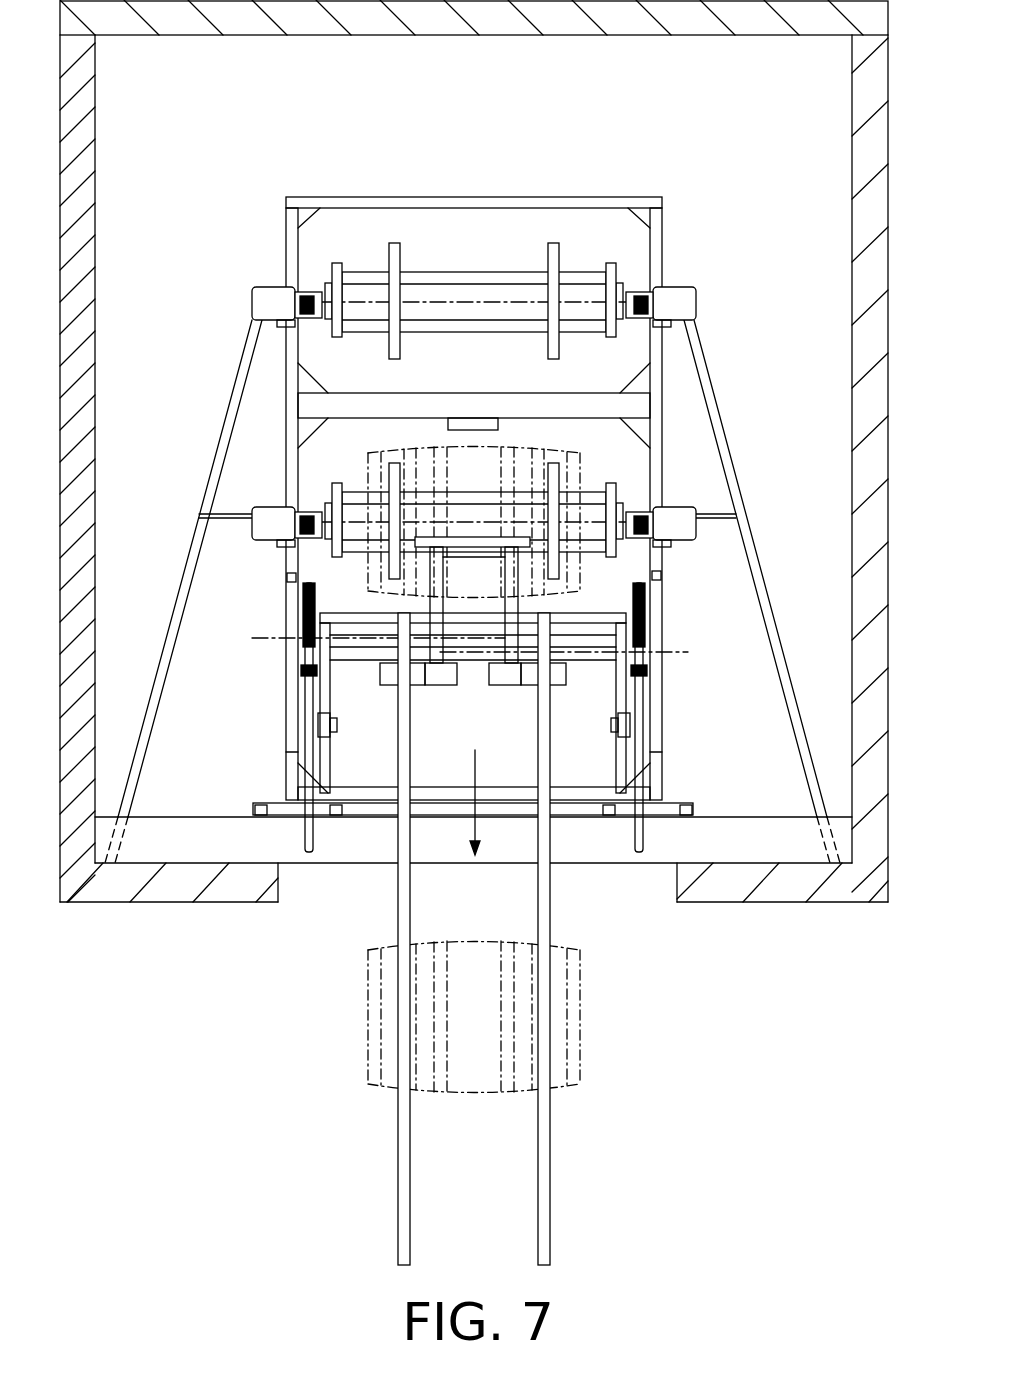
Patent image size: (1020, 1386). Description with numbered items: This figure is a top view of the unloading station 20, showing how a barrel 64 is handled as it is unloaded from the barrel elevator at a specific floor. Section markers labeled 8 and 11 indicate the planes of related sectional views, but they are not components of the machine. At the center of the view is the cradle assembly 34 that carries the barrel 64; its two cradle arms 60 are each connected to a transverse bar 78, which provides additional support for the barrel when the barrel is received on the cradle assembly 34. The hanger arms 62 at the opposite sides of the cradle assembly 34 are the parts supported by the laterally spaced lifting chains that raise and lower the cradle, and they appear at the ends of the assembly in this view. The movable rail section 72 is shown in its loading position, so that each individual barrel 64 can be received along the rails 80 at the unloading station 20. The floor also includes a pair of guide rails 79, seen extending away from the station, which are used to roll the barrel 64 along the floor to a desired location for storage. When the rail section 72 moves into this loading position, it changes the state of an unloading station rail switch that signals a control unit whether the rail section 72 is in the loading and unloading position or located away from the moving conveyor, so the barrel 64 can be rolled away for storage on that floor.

The unloading station 20 is at (252, 684).
The cradle assembly 34 is at (360, 254).
The cradle arms 60 is at (401, 262).
The hanger arms 62 is at (334, 272).
The barrel 64 is at (408, 447).
The movable rail section 72 is at (557, 597).
The transverse bar 78 is at (470, 272).
The guide rails 79 is at (553, 1220).
The rails 80 is at (553, 768).
The section line 8- 8 is at (298, 377).
The section line 11- 11 is at (650, 378).